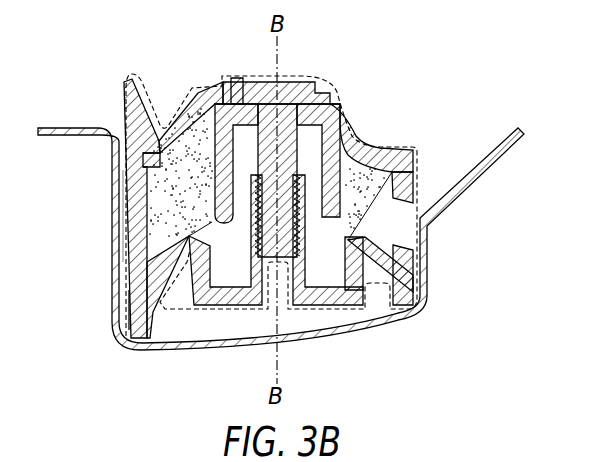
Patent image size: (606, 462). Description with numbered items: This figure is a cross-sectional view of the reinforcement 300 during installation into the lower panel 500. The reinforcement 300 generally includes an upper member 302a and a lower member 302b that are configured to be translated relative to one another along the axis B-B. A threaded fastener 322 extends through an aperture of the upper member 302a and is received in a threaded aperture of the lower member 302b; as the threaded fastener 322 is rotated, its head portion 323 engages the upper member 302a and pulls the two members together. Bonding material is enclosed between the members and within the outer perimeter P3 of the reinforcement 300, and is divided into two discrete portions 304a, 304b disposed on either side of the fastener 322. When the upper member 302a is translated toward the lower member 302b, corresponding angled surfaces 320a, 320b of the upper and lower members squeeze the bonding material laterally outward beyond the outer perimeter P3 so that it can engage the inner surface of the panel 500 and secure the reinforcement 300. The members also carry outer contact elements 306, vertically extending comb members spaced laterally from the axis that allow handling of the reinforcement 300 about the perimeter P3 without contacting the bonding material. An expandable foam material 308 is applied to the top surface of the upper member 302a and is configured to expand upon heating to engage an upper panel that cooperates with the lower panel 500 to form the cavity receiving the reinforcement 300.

The reinforcement 300 is at (106, 53).
The upper member 302a is at (182, 100).
The lower member 302b is at (229, 304).
The expandable foam material 308 is at (240, 80).
The head portion 323 is at (298, 86).
The outer perimeter P3 is at (337, 88).
The threaded fastener 322 is at (342, 133).
The outer contact elements 306 is at (123, 168).
The portion of bonding material 304a is at (158, 246).
The portion of bonding material 304b is at (356, 208).
The angled surface 320a is at (157, 154).
The angled surface 320b is at (121, 296).
The lower panel 500 is at (427, 294).